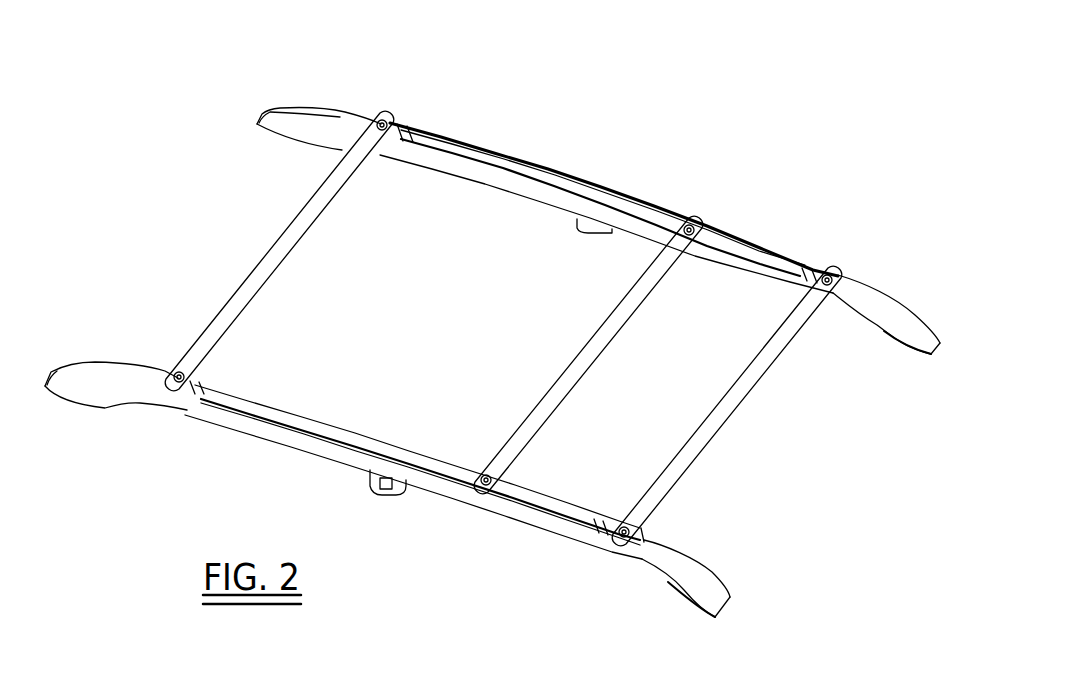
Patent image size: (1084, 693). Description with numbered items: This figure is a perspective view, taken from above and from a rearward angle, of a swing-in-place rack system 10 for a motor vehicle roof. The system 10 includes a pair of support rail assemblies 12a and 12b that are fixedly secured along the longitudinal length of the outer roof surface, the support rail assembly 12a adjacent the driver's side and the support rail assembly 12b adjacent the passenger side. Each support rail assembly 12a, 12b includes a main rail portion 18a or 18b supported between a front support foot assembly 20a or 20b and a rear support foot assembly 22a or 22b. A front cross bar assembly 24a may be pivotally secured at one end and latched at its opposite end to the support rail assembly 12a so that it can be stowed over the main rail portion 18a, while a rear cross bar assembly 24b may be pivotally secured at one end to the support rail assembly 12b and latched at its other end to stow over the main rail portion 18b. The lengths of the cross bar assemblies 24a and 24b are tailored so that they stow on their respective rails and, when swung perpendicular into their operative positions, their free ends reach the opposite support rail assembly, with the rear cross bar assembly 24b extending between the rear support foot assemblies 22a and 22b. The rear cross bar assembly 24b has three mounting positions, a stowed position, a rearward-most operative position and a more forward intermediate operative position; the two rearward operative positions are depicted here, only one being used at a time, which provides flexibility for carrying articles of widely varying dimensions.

The swing-in-place rack system 10 is at (635, 147).
The support rail assembly 12a is at (244, 441).
The support rail assembly 12b is at (663, 192).
The main rail portion 18a is at (463, 491).
The main rail portion 18b is at (489, 176).
The front support foot assembly 20a is at (112, 368).
The front support foot assembly 20b is at (314, 107).
The rear support foot assembly 22a is at (678, 578).
The rear support foot assembly 22b is at (878, 325).
The front cross bar assembly 24a is at (268, 270).
The rear cross bar assembly 24b is at (568, 380).